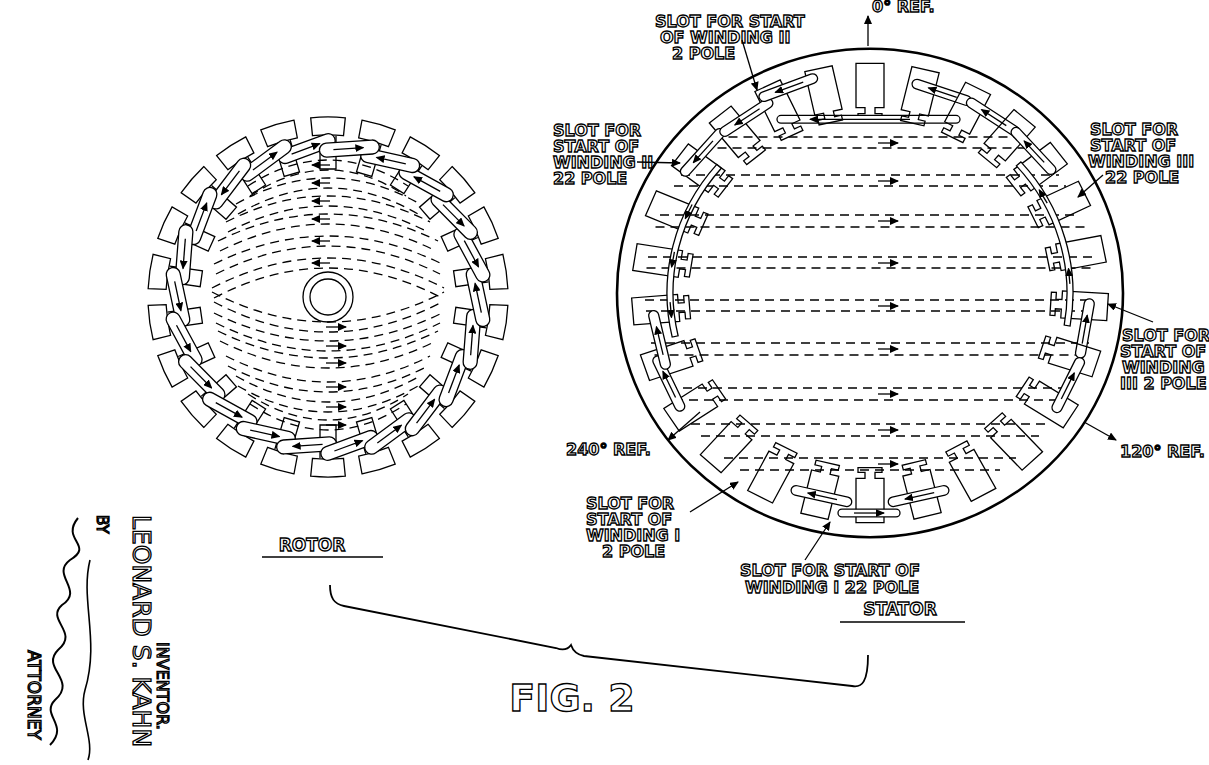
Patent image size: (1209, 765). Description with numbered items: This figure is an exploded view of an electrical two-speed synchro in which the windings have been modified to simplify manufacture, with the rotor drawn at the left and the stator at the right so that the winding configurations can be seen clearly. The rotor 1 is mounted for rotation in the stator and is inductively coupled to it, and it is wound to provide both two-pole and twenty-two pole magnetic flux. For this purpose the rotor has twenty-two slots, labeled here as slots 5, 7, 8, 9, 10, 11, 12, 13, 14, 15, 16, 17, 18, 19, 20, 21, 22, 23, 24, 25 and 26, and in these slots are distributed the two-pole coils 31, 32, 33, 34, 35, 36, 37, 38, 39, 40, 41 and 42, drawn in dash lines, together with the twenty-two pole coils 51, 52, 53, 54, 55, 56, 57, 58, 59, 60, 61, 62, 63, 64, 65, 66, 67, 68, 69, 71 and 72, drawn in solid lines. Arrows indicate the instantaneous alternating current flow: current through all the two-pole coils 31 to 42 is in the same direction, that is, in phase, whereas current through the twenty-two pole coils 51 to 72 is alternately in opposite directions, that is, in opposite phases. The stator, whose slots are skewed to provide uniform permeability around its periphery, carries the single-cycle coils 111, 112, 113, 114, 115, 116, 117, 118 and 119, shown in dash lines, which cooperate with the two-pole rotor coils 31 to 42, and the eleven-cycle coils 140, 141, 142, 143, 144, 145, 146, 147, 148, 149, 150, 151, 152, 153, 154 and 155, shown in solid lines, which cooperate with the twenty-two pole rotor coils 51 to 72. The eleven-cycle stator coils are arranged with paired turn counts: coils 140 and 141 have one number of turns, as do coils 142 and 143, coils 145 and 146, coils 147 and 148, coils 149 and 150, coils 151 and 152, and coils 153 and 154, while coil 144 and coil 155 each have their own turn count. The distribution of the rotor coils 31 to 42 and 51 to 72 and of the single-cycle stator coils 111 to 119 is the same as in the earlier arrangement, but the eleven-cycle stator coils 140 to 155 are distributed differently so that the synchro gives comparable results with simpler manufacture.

The rotor 1 is at (296, 117).
The rotor slot 5 is at (328, 119).
The rotor slot 7 is at (232, 147).
The rotor slot 8 is at (193, 180).
The rotor slot 9 is at (166, 223).
The rotor slot 10 is at (152, 272).
The rotor slot 11 is at (152, 322).
The rotor slot 12 is at (166, 371).
The rotor slot 13 is at (193, 414).
The rotor slot 14 is at (232, 447).
The rotor slot 15 is at (278, 468).
The rotor slot 16 is at (328, 475).
The rotor slot 17 is at (378, 468).
The rotor slot 18 is at (424, 447).
The rotor slot 19 is at (463, 414).
The rotor slot 20 is at (490, 371).
The rotor slot 21 is at (504, 322).
The rotor slot 22 is at (504, 272).
The rotor slot 23 is at (490, 223).
The rotor slot 24 is at (463, 180).
The rotor slot 25 is at (424, 147).
The rotor slot 26 is at (378, 126).
The two-pole coil 31 is at (328, 178).
The two-pole coil 32 is at (328, 196).
The two-pole coil 33 is at (328, 214).
The two-pole coil 34 is at (328, 232).
The two-pole coil 35 is at (328, 255).
The two-pole coil 36 is at (328, 278).
The two-pole coil 37 is at (328, 316).
The two-pole coil 38 is at (328, 336).
The two-pole coil 39 is at (328, 353).
The two-pole coil 40 is at (328, 377).
The two-pole coil 41 is at (328, 397).
The two-pole coil 42 is at (328, 414).
The twenty-two pole coil 51 is at (307, 149).
The twenty-two pole coil 52 is at (266, 161).
The twenty-two pole coil 53 is at (230, 184).
The twenty-two pole coil 54 is at (202, 216).
The twenty-two pole coil 55 is at (184, 255).
The twenty-two pole coil 56 is at (178, 297).
The twenty-two pole coil 57 is at (184, 339).
The twenty-two pole coil 58 is at (202, 378).
The twenty-two pole coil 59 is at (230, 410).
The twenty-two pole coil 60 is at (266, 433).
The twenty-two pole coil 61 is at (307, 445).
The twenty-two pole coil 62 is at (349, 445).
The twenty-two pole coil 63 is at (390, 433).
The twenty-two pole coil 64 is at (426, 410).
The twenty-two pole coil 65 is at (454, 378).
The twenty-two pole coil 66 is at (472, 339).
The twenty-two pole coil 67 is at (478, 297).
The twenty-two pole coil 68 is at (472, 255).
The twenty-two pole coil 69 is at (454, 216).
The twenty-two pole coil 71 is at (390, 161).
The twenty-two pole coil 72 is at (349, 149).
The single-cycle stator coil 111 is at (870, 144).
The single-cycle stator coil 112 is at (870, 182).
The single-cycle stator coil 113 is at (870, 222).
The single-cycle stator coil 114 is at (870, 264).
The single-cycle stator coil 115 is at (870, 307).
The single-cycle stator coil 116 is at (870, 350).
The single-cycle stator coil 117 is at (870, 395).
The single-cycle stator coil 118 is at (870, 431).
The single-cycle stator coil 119 is at (870, 465).
The eleven-cycle stator coil 140 is at (792, 82).
The eleven-cycle stator coil 141 is at (950, 80).
The eleven-cycle stator coil 142 is at (740, 104).
The eleven-cycle stator coil 143 is at (1000, 105).
The eleven-cycle stator coil 144 is at (897, 60).
The eleven-cycle stator coil 145 is at (700, 140).
The eleven-cycle stator coil 146 is at (1045, 135).
The eleven-cycle stator coil 147 is at (638, 257).
The eleven-cycle stator coil 148 is at (1100, 252).
The eleven-cycle stator coil 149 is at (640, 338).
The eleven-cycle stator coil 150 is at (1094, 298).
The eleven-cycle stator coil 151 is at (655, 388).
The eleven-cycle stator coil 152 is at (1082, 395).
The eleven-cycle stator coil 153 is at (815, 512).
The eleven-cycle stator coil 154 is at (930, 512).
The eleven-cycle stator coil 155 is at (868, 522).